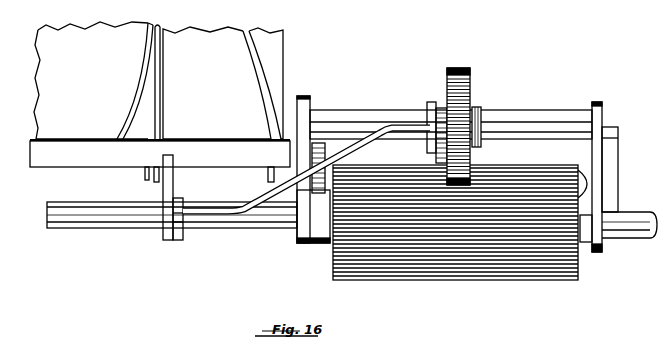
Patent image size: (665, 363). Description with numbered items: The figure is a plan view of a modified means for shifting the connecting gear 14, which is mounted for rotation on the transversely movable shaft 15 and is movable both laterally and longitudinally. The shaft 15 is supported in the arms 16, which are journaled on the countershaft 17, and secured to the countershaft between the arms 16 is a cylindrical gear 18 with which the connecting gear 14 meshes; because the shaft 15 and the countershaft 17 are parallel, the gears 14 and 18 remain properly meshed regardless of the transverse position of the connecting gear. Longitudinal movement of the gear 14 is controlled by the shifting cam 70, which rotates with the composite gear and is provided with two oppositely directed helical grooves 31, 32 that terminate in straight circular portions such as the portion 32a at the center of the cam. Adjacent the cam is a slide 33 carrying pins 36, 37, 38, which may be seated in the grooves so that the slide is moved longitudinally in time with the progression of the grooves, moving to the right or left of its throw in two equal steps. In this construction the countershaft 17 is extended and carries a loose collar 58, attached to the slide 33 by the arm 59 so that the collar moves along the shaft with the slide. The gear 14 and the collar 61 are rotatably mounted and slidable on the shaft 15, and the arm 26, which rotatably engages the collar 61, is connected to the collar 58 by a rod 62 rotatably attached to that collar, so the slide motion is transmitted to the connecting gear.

The connecting gear 14 is at (464, 70).
The transversely movable shaft 15 is at (543, 118).
The arms 16 is at (305, 190).
The countershaft 17 is at (630, 240).
The cylindrical gear 18 is at (478, 281).
The arm 26 is at (435, 157).
The helical groove 31 is at (148, 61).
The helical groove 32 is at (262, 77).
The straight portion of groove 32a is at (162, 77).
The slide 33 is at (160, 153).
The pin 36 is at (143, 173).
The pin 37 is at (155, 183).
The pin 38 is at (267, 177).
The loose collar 58 is at (178, 239).
The arm 59 is at (174, 178).
The collar 61 is at (474, 110).
The rod 62 is at (242, 216).
The shifting cam 70 is at (217, 83).